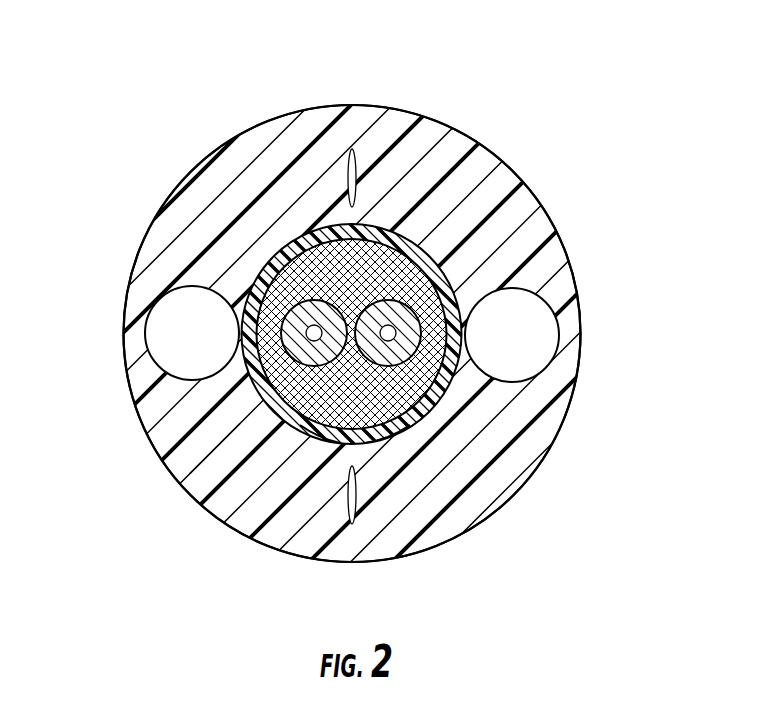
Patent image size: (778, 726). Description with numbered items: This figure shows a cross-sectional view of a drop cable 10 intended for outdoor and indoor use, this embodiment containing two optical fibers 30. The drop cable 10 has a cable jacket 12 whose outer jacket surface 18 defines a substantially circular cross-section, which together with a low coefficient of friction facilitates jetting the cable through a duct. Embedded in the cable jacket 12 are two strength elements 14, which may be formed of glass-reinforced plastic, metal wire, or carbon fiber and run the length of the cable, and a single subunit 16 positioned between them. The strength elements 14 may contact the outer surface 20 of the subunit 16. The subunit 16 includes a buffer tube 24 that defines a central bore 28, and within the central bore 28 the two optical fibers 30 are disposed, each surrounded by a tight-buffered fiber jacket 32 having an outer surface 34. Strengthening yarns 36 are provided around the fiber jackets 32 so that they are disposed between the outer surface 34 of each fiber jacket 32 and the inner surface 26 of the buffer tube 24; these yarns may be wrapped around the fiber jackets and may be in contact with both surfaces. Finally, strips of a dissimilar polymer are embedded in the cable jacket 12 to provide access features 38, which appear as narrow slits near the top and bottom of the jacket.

The drop cable 10 is at (239, 103).
The cable jacket 12 is at (205, 188).
The strength elements 14 is at (160, 343).
The subunit 16 is at (411, 227).
The outer jacket surface 18 is at (264, 547).
The outer surface of the subunit 20 is at (452, 236).
The buffer tube 24 is at (430, 408).
The inner surface of the buffer tube 26 is at (322, 427).
The central bore 28 is at (215, 456).
The optical fibers 30 is at (313, 325).
The fiber jacket 32 is at (306, 336).
The outer surface of the fiber jacket 34 is at (373, 293).
The strengthening yarns 36 is at (390, 433).
The access features 38 is at (350, 152).